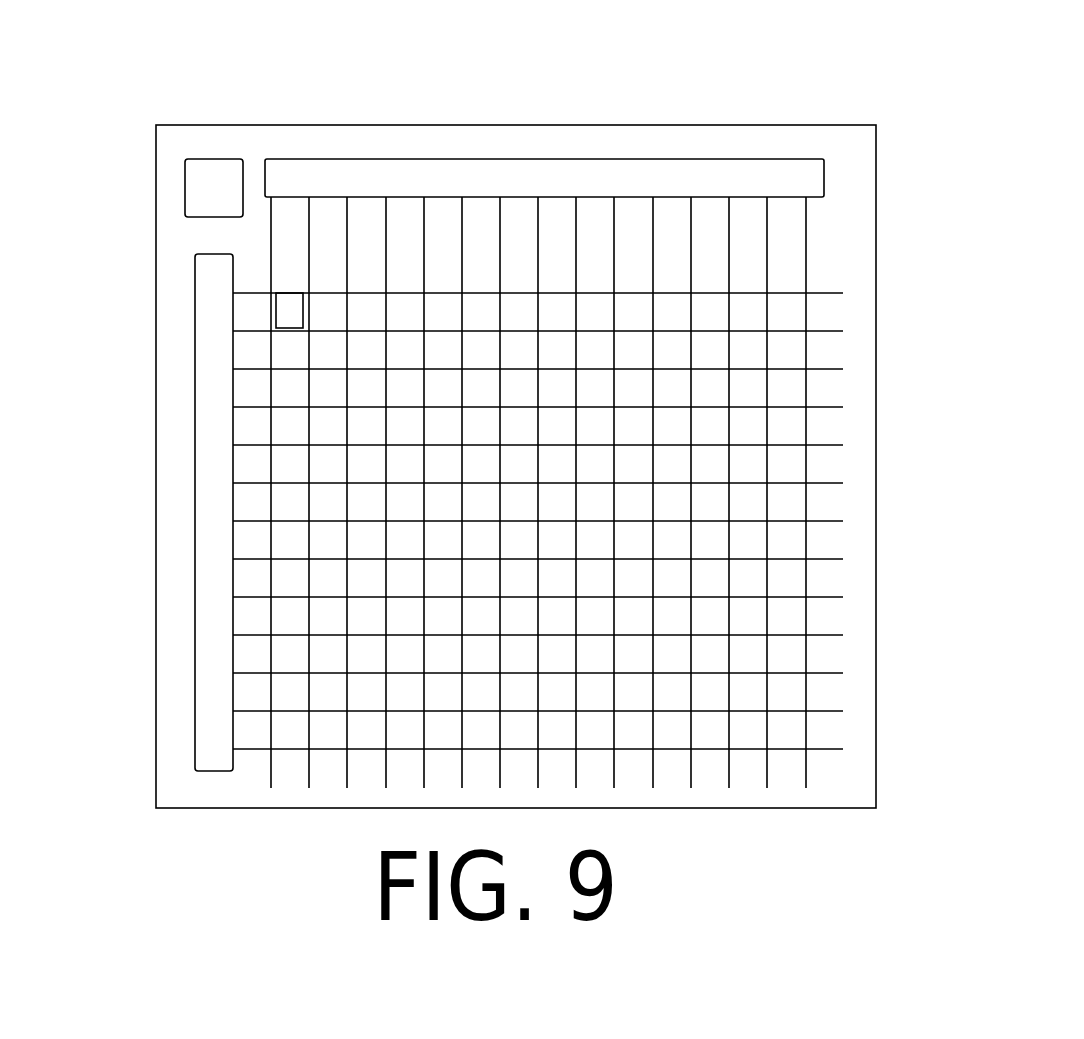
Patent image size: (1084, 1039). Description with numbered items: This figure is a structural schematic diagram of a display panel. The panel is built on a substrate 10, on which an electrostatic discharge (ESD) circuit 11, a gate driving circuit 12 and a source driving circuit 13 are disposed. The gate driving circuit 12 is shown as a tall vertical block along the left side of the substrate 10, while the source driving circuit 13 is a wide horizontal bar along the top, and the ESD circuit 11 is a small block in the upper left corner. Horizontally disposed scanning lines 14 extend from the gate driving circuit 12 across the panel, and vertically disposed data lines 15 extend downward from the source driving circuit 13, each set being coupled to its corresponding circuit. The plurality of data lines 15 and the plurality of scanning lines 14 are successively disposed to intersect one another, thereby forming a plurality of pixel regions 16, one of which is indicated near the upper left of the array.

The substrate 10 is at (852, 165).
The control chip 11 is at (210, 187).
The row driver 12 is at (214, 637).
The column driver 13 is at (585, 180).
The row lines 14 is at (826, 366).
The column lines 15 is at (806, 270).
The pixel unit 16 is at (285, 312).